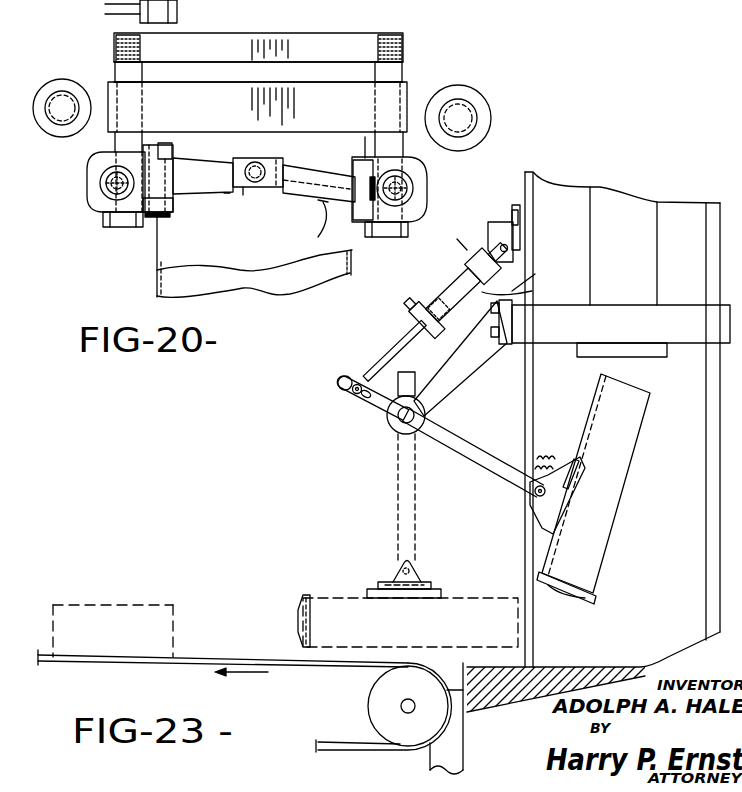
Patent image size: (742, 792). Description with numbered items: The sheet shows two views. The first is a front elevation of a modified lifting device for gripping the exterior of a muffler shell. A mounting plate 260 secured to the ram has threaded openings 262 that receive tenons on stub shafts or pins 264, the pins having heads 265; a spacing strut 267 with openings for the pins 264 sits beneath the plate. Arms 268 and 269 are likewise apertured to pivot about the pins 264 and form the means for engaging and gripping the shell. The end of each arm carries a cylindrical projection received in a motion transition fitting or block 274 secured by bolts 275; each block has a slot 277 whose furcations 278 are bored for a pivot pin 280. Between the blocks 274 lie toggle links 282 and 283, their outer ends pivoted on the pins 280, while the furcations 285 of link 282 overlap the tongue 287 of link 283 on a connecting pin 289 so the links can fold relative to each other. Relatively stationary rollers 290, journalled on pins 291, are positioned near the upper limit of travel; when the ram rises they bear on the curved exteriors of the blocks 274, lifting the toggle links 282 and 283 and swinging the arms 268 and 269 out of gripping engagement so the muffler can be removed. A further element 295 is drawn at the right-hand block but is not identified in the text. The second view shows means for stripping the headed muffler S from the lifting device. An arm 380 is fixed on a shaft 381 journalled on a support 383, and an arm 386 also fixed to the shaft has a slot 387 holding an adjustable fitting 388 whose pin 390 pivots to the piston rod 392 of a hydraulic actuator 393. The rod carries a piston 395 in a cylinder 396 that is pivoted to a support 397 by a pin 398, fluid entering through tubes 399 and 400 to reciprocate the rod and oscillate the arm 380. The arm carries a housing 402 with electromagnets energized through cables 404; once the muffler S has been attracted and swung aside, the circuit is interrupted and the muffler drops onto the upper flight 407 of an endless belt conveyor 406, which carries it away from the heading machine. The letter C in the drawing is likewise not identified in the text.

In FIG. 20, the mounting plate 260 is at (404, 46).
In FIG. 20, the threaded openings 262 is at (112, 40).
In FIG. 20, the stub shafts or pins 264 is at (404, 77).
In FIG. 20, the spacing strut 267 is at (191, 111).
In FIG. 20, the arm 268 is at (89, 205).
In FIG. 20, the arm 269 is at (425, 213).
In FIG. 20, the heads 265 is at (103, 223).
In FIG. 20, the motion transition fitting or block 274 is at (100, 153).
In FIG. 20, the bolts 275 is at (100, 182).
In FIG. 20, the slot 277 is at (174, 201).
In FIG. 20, the furcations 278 is at (172, 218).
In FIG. 20, the pivot pin or shaft 280 is at (165, 182).
In FIG. 20, the toggle link 282 is at (323, 203).
In FIG. 20, the toggle link 283 is at (220, 164).
In FIG. 20, the furcations 285 is at (227, 196).
In FIG. 20, the tongue 287 is at (258, 164).
In FIG. 20, the connecting pin or shaft 289 is at (245, 188).
In FIG. 20, the rollers 290 is at (104, 76).
In FIG. 20, the pins 291 is at (48, 95).
In FIG. 20, the right bearing 295 is at (407, 190).
In FIG. 20, the muffler S is at (157, 260).
In FIG. 23, the muffler S is at (613, 503).
In FIG. 23, the carriage C is at (300, 614).
In FIG. 23, the arm 380 is at (473, 462).
In FIG. 23, the shaft 381 is at (392, 428).
In FIG. 23, the support 383 is at (467, 373).
In FIG. 23, the arm or member 386 is at (338, 382).
In FIG. 23, the slot 387 is at (342, 393).
In FIG. 23, the fitting 388 is at (353, 398).
In FIG. 23, the pin 390 is at (363, 378).
In FIG. 23, the piston rod 392 is at (400, 342).
In FIG. 23, the hydraulic actuator 393 is at (461, 278).
In FIG. 23, the piston 395 is at (434, 302).
In FIG. 23, the cylinder 396 is at (500, 295).
In FIG. 23, the support 397 is at (514, 232).
In FIG. 23, the shaft or pin 398 is at (508, 248).
In FIG. 23, the tube 399 is at (405, 305).
In FIG. 23, the tube 400 is at (470, 244).
In FIG. 23, the housing or casing 402 is at (577, 445).
In FIG. 23, the cables or conductors 404 is at (555, 467).
In FIG. 23, the conveyor 406 is at (348, 677).
In FIG. 23, the upper flight 407 is at (143, 631).